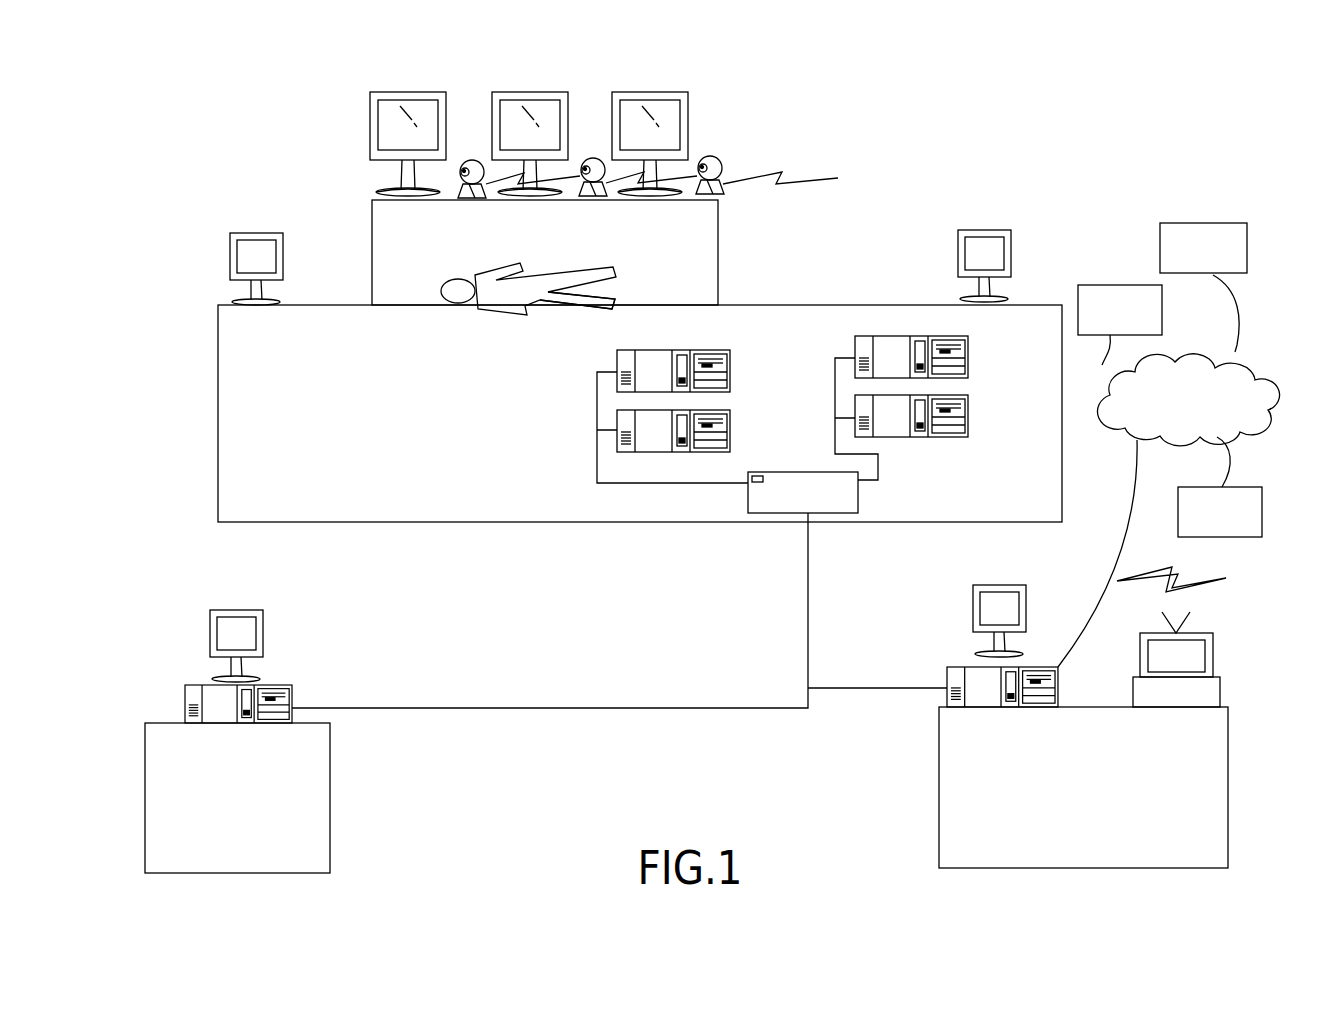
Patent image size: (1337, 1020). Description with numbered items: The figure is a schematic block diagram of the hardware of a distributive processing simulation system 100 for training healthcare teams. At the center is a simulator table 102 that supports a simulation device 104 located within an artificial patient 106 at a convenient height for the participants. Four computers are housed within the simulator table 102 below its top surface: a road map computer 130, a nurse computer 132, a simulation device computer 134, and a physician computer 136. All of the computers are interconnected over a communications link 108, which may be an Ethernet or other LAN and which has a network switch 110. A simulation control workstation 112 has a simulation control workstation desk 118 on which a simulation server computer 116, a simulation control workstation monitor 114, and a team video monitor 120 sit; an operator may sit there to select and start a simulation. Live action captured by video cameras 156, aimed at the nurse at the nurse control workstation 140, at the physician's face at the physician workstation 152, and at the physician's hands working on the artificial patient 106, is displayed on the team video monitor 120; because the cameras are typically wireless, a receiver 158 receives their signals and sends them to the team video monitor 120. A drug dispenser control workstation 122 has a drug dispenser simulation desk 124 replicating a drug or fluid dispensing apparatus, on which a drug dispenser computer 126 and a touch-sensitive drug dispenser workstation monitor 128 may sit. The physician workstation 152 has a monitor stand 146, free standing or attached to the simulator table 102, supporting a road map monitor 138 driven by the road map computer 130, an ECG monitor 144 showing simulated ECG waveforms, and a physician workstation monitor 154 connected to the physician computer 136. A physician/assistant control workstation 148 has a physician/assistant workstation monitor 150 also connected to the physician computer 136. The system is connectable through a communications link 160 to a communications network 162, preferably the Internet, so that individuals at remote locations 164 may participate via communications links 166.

The simulation system 100 is at (140, 88).
The simulator table 102 is at (218, 442).
The simulation device 104 is at (533, 293).
The artificial patient 106 is at (616, 270).
The communications link 108 is at (808, 605).
The network switch 110 is at (858, 492).
The simulation control workstation 112 is at (986, 564).
The simulation control workstation monitor 114 is at (1032, 603).
The simulation server computer 116 is at (1058, 678).
The simulation control workstation desk 118 is at (1228, 768).
The team video monitor 120 is at (1213, 648).
The drug dispenser control workstation 122 is at (296, 604).
The drug dispenser simulation desk 124 is at (330, 812).
The drug dispenser computer 126 is at (292, 700).
The drug dispenser workstation monitor 128 is at (265, 637).
The road map computer 130 is at (730, 368).
The nurse computer 132 is at (730, 428).
The simulation device computer 134 is at (967, 360).
The physician computer 136 is at (967, 420).
The road map monitor 138 is at (372, 104).
The nurse control workstation 140 is at (212, 210).
The ECG monitor 144 is at (688, 116).
The monitor stand 146 is at (718, 230).
The physician/assistant control workstation 148 is at (1024, 210).
The physician/assistant workstation monitor 150 is at (1011, 256).
The physician workstation 152 is at (748, 97).
The physician workstation monitor 154 is at (570, 105).
The video cameras 156 is at (473, 158).
The receiver 158 is at (1220, 690).
The communications link 160 is at (1122, 530).
The communications network 162 is at (1172, 447).
The remote locations 164 is at (1160, 240).
The communications links 166 is at (1214, 330).